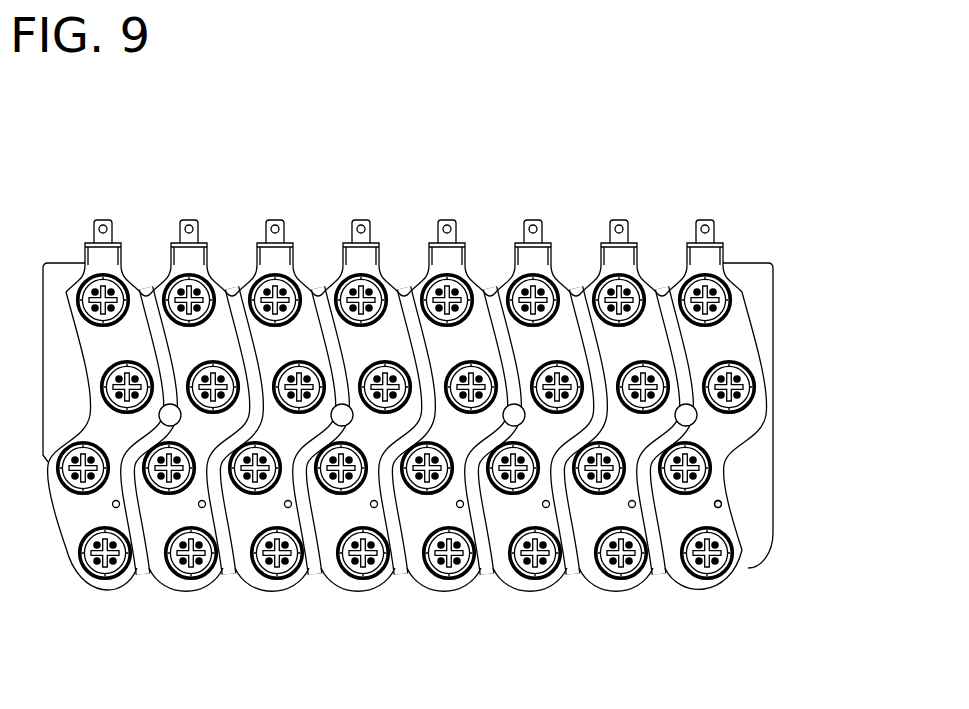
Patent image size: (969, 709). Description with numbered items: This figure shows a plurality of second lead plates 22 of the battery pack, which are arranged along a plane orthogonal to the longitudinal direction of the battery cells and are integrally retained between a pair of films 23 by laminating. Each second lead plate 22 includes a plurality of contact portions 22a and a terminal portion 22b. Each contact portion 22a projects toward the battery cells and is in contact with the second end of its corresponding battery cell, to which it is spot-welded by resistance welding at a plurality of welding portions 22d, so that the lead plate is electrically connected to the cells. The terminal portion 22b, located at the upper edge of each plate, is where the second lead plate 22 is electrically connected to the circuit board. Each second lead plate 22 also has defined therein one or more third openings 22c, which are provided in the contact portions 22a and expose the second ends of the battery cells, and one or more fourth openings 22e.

The second lead plate 22 is at (465, 393).
The contact portion 22a is at (633, 280).
The terminal portion 22b is at (618, 224).
The third opening 22c is at (640, 302).
The welding portion 22d is at (628, 312).
The fourth opening 22e is at (724, 504).
The film 23 is at (235, 293).